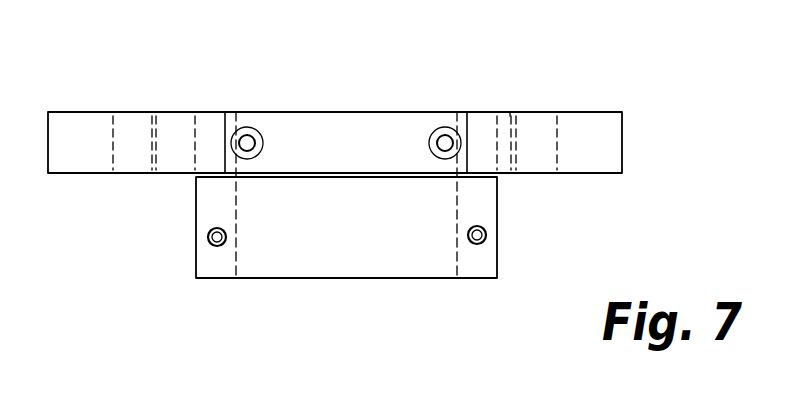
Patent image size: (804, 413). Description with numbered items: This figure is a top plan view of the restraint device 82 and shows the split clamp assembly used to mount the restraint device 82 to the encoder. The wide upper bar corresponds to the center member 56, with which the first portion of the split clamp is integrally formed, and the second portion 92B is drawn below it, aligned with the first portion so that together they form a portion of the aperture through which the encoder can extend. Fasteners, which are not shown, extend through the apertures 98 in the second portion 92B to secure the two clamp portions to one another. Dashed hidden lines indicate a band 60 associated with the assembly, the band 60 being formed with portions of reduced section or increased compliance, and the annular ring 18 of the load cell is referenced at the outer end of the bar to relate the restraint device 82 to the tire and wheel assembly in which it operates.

The restraint device 82 is at (90, 92).
The annular ring 18 is at (592, 111).
The center member 56 is at (208, 111).
The band 60 is at (510, 112).
The second portion 92B is at (415, 280).
The apertures 98 is at (208, 231).